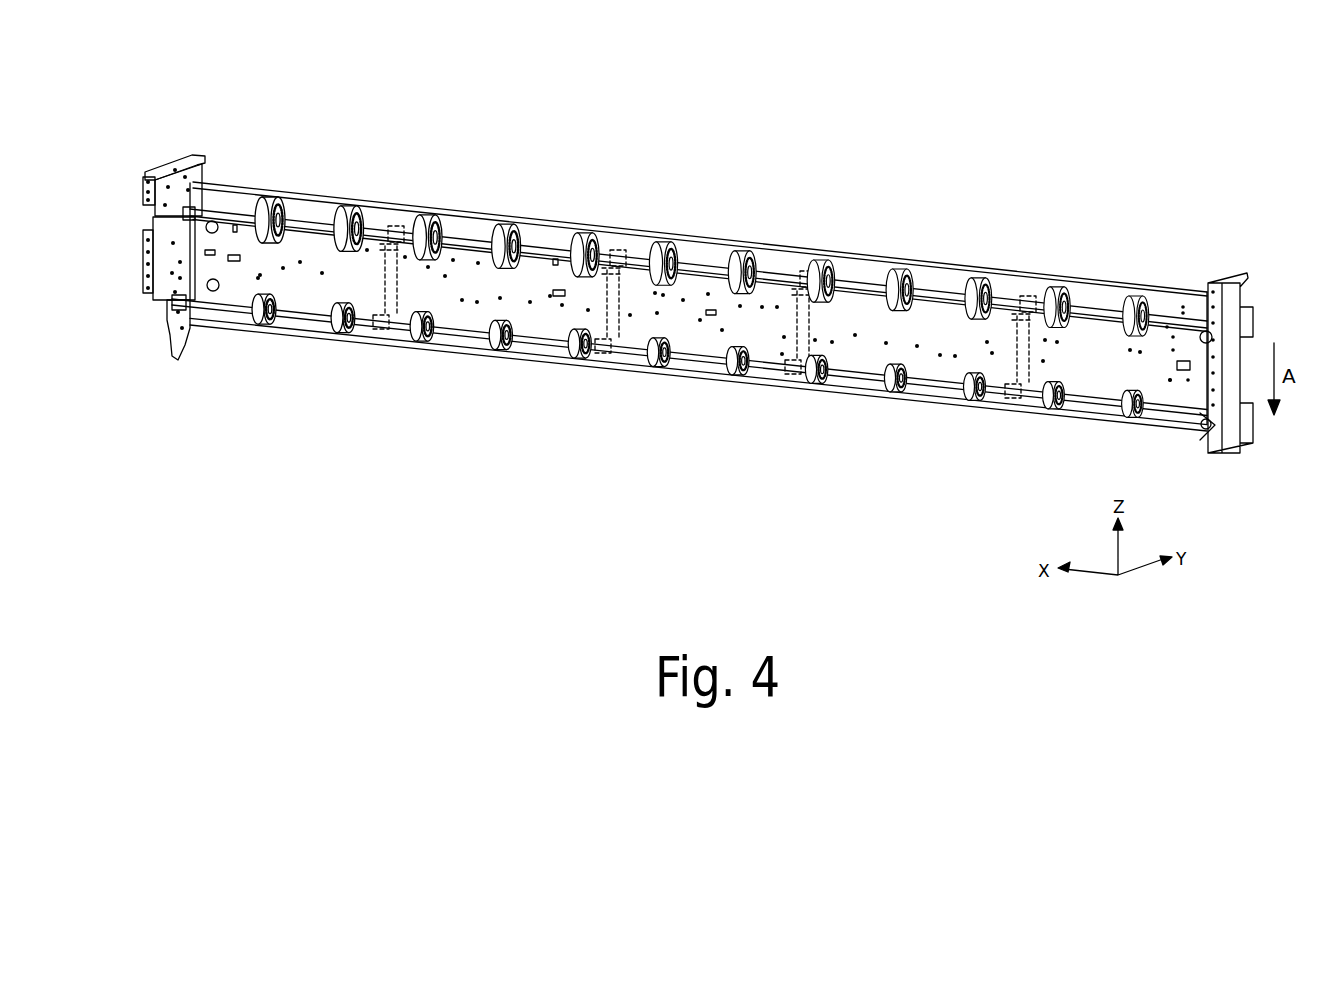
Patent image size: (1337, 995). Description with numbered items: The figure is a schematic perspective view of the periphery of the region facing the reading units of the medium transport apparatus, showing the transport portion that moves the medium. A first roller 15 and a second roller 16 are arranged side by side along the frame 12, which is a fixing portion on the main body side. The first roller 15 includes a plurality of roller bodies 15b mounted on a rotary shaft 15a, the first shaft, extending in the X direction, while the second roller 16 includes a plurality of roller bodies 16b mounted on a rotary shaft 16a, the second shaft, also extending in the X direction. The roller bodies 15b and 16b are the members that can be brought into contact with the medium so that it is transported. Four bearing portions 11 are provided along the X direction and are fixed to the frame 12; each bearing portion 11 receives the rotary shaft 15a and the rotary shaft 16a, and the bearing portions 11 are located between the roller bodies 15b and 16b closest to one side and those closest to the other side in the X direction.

The bearing portion 11 is at (395, 208).
The frame 12 is at (470, 275).
The first roller 15 is at (698, 210).
The rotary shaft 15a is at (300, 222).
The roller bodies 15b is at (340, 187).
The second roller 16 is at (689, 368).
The rotary shaft 16a is at (288, 313).
The roller bodies 16b is at (330, 349).